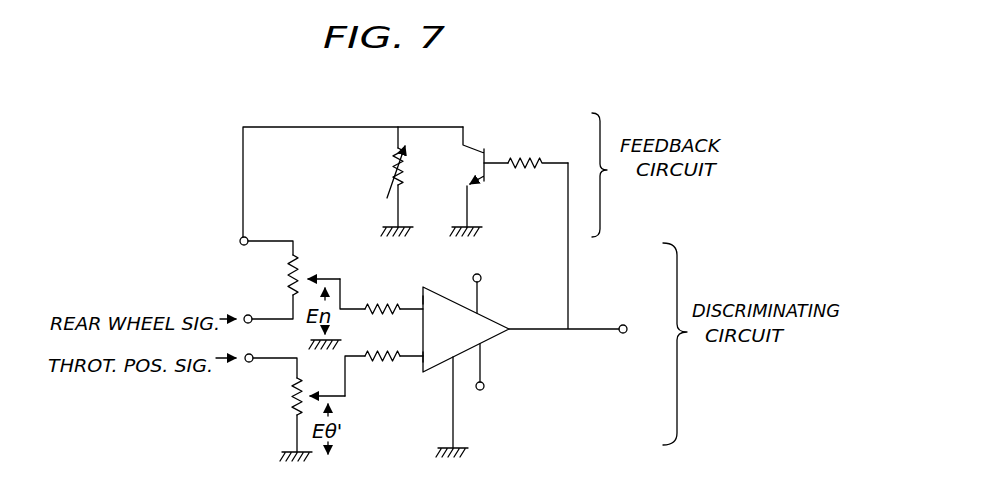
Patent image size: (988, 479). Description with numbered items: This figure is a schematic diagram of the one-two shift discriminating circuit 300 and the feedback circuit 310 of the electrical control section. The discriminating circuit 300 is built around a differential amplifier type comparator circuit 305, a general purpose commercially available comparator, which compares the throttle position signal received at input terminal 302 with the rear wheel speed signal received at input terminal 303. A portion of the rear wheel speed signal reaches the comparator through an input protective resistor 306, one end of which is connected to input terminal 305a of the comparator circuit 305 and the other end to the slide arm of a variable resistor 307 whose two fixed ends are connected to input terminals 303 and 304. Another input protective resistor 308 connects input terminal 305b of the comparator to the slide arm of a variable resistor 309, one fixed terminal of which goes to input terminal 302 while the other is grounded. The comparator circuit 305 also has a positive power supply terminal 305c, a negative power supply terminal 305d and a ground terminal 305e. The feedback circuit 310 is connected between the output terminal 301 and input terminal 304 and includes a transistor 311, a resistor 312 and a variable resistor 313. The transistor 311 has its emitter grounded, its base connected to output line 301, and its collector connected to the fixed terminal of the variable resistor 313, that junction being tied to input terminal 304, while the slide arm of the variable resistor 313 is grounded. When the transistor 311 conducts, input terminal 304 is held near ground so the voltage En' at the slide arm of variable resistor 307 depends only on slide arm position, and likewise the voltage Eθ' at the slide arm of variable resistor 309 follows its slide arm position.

The discriminating circuit 300 is at (437, 329).
The output terminal 301 is at (627, 312).
The input terminal 302 is at (251, 363).
The input terminal 303 is at (249, 314).
The input terminal 304 is at (248, 246).
The comparator circuit 305 is at (516, 337).
The input terminal 305a is at (410, 300).
The input terminal 305b is at (421, 358).
The positive power supply terminal 305c is at (481, 282).
The negative power supply terminal 305d is at (484, 385).
The ground terminal 305e is at (456, 428).
The input protective resistor 306 is at (382, 305).
The variable resistor 307 is at (305, 276).
The input protective resistor 308 is at (378, 362).
The variable resistor 309 is at (290, 404).
The feedback circuit 310 is at (451, 181).
The transistor 311 is at (472, 150).
The resistor 312 is at (530, 154).
The variable resistor 313 is at (394, 179).